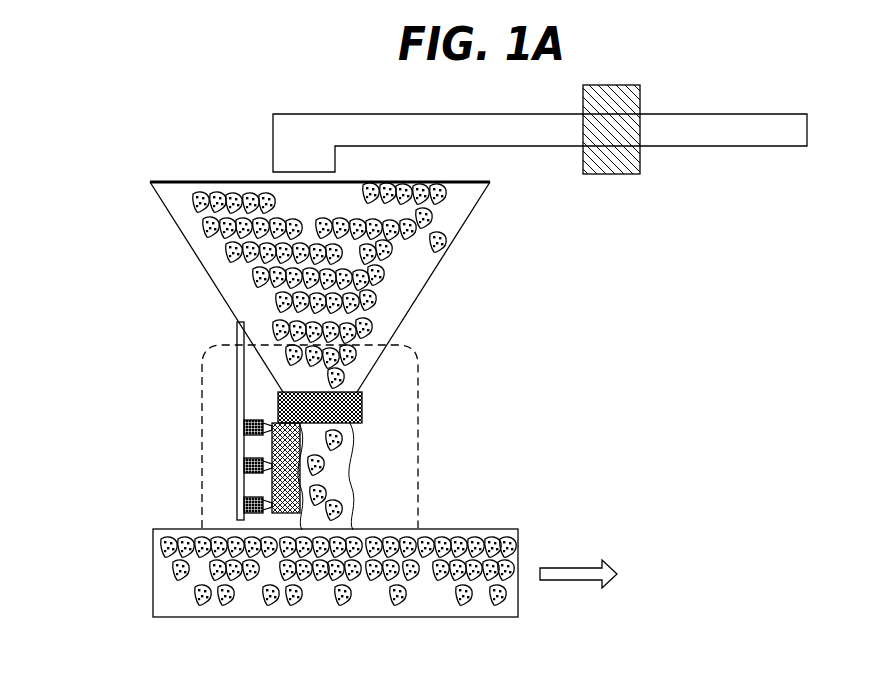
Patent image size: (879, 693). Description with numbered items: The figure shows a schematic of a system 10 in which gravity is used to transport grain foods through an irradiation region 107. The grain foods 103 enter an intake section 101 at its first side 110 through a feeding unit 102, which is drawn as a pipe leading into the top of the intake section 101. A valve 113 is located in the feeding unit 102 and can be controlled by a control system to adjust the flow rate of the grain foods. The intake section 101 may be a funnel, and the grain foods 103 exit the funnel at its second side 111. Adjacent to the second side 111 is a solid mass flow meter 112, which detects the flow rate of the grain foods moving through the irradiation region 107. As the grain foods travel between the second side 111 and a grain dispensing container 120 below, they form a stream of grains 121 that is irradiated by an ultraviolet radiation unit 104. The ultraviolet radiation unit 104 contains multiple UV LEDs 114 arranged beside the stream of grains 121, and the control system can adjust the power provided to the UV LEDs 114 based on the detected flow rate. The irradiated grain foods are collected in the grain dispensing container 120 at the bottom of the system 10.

The system 10 is at (122, 142).
The intake section 101 is at (442, 252).
The feeding unit 102 is at (670, 148).
The grain foods 103 is at (373, 308).
The ultraviolet radiation unit 104 is at (242, 427).
The irradiation region 107 is at (189, 490).
The first side 110 is at (203, 180).
The second side 111 is at (362, 393).
The solid mass flow meter 112 is at (268, 400).
The valve 113 is at (610, 173).
The UV LEDs 114 is at (242, 466).
The grain dispensing container 120 is at (185, 600).
The stream of grains 121 is at (340, 475).